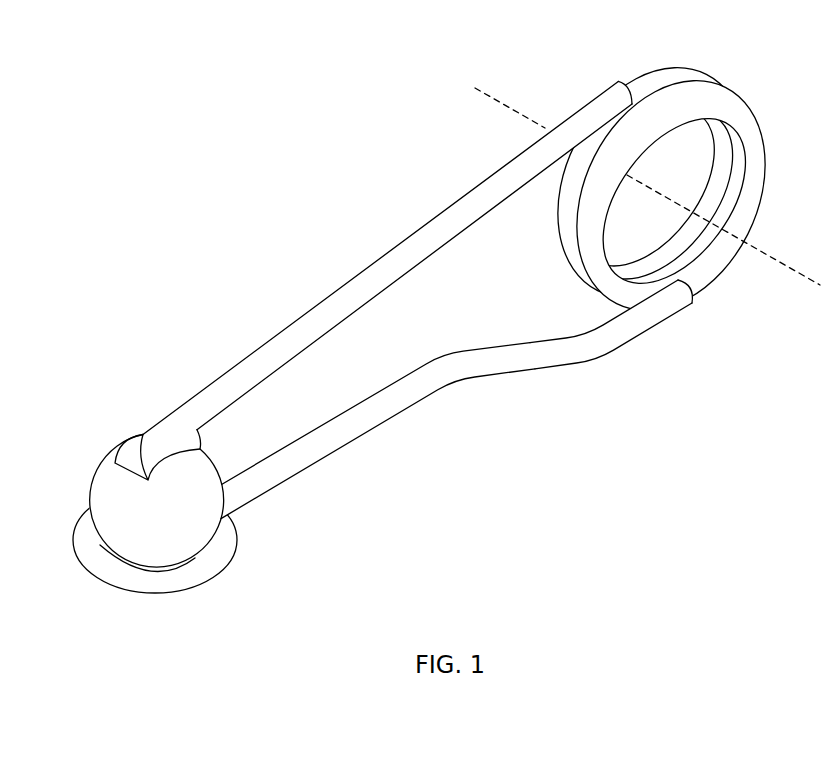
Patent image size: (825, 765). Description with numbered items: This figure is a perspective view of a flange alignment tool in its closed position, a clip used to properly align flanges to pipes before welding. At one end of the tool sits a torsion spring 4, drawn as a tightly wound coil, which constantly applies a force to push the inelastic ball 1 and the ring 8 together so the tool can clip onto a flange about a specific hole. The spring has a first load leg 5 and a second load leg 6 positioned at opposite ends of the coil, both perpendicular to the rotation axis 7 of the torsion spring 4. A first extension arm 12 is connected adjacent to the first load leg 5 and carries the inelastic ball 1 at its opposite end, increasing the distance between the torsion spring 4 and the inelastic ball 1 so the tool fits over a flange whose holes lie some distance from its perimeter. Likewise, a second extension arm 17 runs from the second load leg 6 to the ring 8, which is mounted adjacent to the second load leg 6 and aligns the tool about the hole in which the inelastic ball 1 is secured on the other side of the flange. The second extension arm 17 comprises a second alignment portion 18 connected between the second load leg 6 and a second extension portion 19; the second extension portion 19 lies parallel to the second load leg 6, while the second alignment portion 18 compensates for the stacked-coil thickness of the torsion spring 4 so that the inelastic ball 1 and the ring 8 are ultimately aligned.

The inelastic ball 1 is at (97, 472).
The torsion spring 4 is at (738, 77).
The first load leg 5 is at (622, 82).
The second load leg 6 is at (703, 292).
The rotation axis 7 is at (787, 263).
The ring 8 is at (218, 563).
The first extension arm 12 is at (343, 290).
The second extension arm 17 is at (428, 393).
The second alignment portion 18 is at (560, 366).
The second extension portion 19 is at (324, 458).